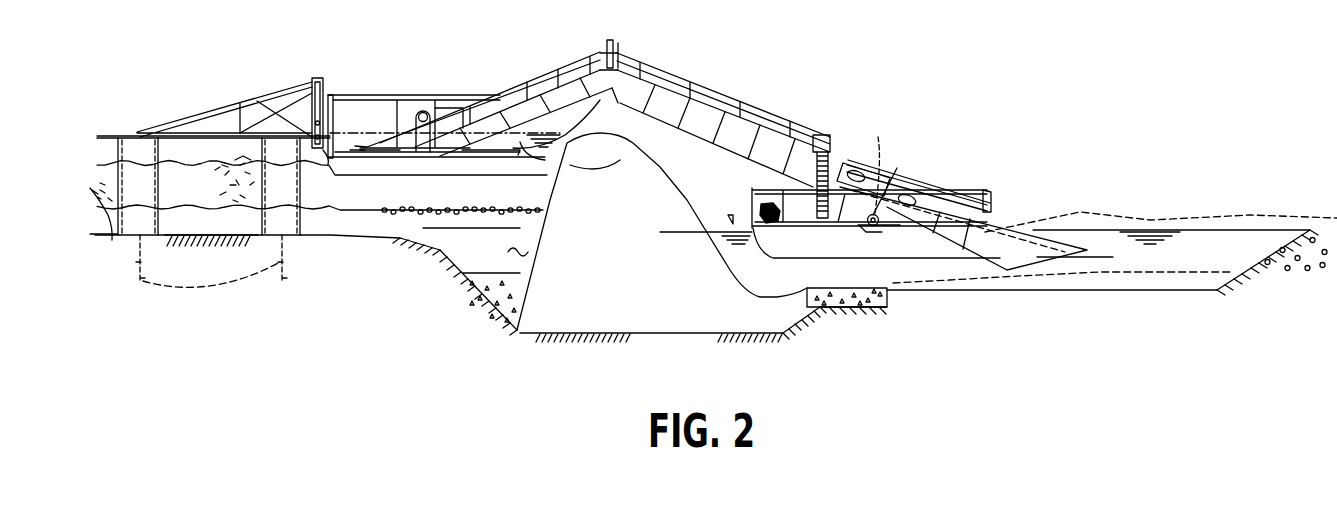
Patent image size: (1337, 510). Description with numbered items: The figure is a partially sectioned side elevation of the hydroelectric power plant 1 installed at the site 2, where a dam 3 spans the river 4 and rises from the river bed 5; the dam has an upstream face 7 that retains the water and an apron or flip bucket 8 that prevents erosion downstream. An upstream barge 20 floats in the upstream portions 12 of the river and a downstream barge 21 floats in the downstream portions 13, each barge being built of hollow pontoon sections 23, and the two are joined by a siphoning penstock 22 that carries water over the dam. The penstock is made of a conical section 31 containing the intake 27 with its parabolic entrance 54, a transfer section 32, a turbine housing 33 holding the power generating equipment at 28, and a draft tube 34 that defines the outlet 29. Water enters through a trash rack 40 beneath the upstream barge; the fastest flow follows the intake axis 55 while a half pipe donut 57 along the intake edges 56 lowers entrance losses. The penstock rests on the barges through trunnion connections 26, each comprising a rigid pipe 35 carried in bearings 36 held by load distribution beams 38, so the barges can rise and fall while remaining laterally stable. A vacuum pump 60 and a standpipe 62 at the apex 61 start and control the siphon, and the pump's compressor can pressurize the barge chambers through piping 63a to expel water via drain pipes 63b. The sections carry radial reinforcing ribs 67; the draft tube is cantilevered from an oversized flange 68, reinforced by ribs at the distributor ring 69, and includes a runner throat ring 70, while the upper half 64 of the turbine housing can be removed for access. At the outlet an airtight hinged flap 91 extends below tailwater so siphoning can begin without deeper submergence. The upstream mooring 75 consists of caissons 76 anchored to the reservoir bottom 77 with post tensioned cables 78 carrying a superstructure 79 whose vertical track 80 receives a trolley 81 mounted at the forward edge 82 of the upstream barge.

The hydroelectric power plant 1 is at (713, 76).
The installation site 2 is at (590, 377).
The dam 3 is at (579, 267).
The river 4 is at (109, 153).
The river bed 5 is at (366, 238).
The upstream face 7 is at (511, 251).
The apron or flip bucket 8 is at (770, 290).
The upstream portions 12 is at (99, 266).
The downstream portions 13 is at (1214, 204).
The upstream barge 20 is at (380, 44).
The downstream barge 21 is at (953, 139).
The siphoning penstock 22 is at (532, 45).
The pontoon sections 23 is at (588, 150).
The trunnion connections 26 is at (424, 108).
The intake 27 is at (378, 164).
The power generating equipment location 28 is at (900, 168).
The outlet 29 is at (1082, 273).
The conical section 31 is at (505, 112).
The transfer section 32 is at (634, 93).
The turbine housing 33 is at (863, 162).
The draft tube 34 is at (1015, 220).
The rigid pipe 35 is at (424, 162).
The bearings 36 is at (428, 107).
The load distribution beams 38 is at (383, 125).
The trash rack 40 is at (427, 152).
The parabolic entrance 54 is at (372, 145).
The intake centerline or axis 55 is at (400, 157).
The edges 56 is at (548, 167).
The half pipe section or donut 57 is at (466, 156).
The vacuum pump 60 is at (607, 57).
The apex 61 is at (608, 97).
The standpipe 62 is at (618, 45).
The piping 63a is at (533, 86).
The drain pipes 63b is at (540, 140).
The upper half of penstock forming turbine housing 64 is at (850, 162).
The radial reinforcing ribs 67 is at (563, 88).
The flange 68 is at (892, 180).
The distributor ring or outer barrel 69 is at (893, 190).
The runner throat ring 70 is at (900, 195).
The upstream mooring 75 is at (205, 106).
The caissons 76 is at (266, 222).
The reservoir bottom 77 is at (178, 196).
The post tensioned cables 78 is at (212, 269).
The mooring superstructure 79 is at (180, 122).
The vertical track 80 is at (312, 82).
The trolley 81 is at (262, 98).
The forward edge 82 is at (323, 152).
The airtight hinged flap 91 is at (1050, 230).